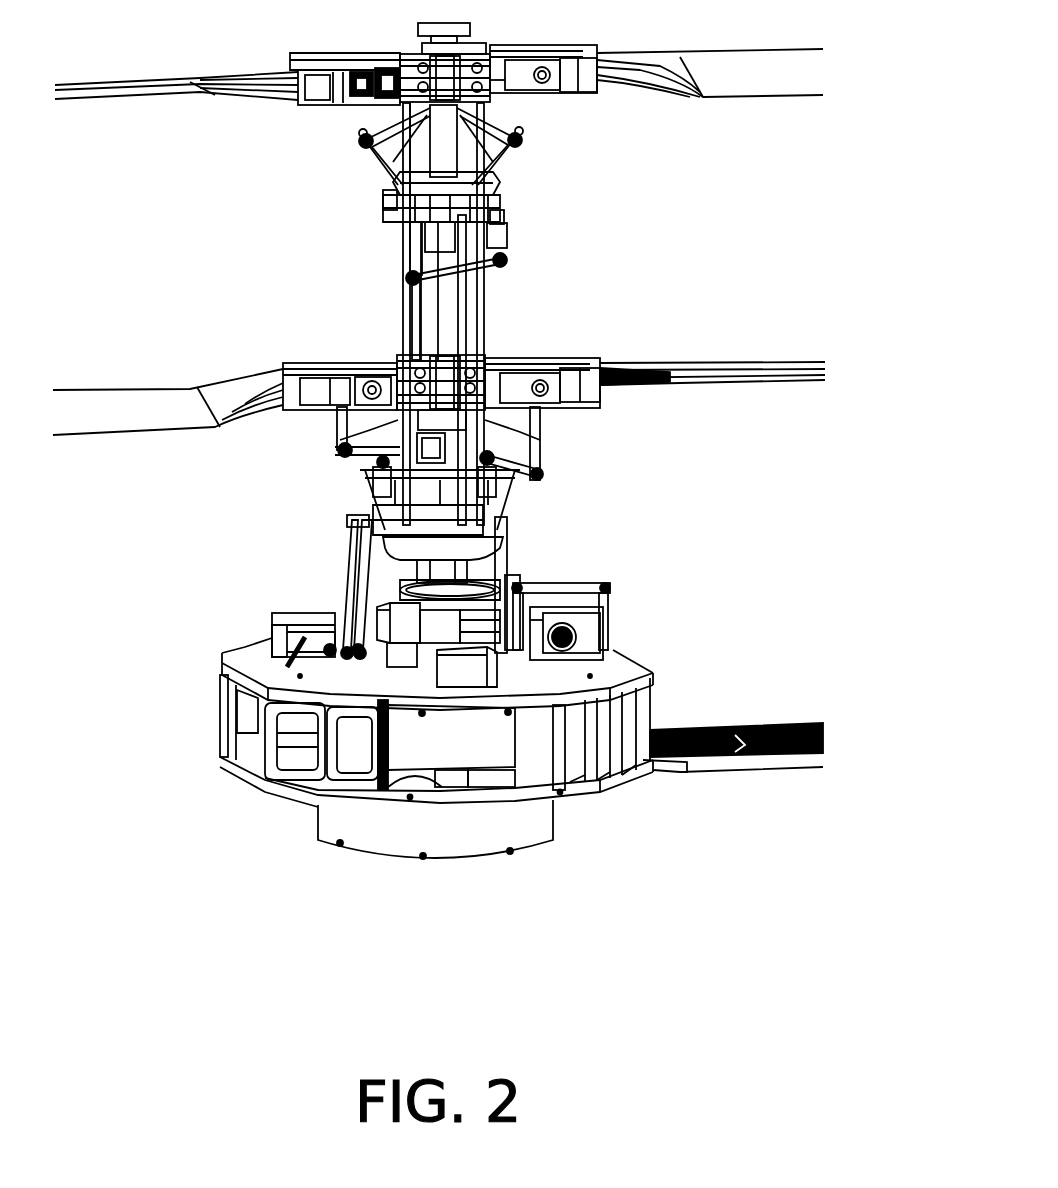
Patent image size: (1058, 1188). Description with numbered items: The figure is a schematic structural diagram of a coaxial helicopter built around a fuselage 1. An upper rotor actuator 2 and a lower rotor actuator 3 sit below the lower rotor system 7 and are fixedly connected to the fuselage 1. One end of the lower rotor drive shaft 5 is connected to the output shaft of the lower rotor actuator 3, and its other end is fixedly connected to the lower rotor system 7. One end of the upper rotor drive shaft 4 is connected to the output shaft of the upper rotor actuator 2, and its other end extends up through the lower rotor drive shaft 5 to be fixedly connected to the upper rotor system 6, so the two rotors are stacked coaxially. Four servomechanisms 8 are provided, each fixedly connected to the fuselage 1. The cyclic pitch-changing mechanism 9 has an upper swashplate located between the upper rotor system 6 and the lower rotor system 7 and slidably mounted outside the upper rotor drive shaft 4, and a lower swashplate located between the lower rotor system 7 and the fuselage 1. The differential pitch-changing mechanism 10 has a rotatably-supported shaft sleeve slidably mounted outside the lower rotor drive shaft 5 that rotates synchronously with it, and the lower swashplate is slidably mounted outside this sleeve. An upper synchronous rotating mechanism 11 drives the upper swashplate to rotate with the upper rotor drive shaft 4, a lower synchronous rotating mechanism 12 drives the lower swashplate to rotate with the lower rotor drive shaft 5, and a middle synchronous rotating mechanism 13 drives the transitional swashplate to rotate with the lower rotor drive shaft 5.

The fuselage 1 is at (253, 667).
The upper rotor actuator 2 is at (340, 824).
The lower rotor actuator 3 is at (440, 738).
The upper rotor drive shaft 4 is at (437, 158).
The lower rotor drive shaft 5 is at (440, 627).
The upper rotor system 6 is at (293, 93).
The lower rotor system 7 is at (190, 397).
The servomechanism 8 is at (313, 615).
The cyclic pitch-changing mechanism 9 is at (482, 345).
The differential pitch-changing mechanism 10 is at (580, 592).
The upper synchronous rotating mechanism 11 is at (517, 135).
The lower synchronous rotating mechanism 12 is at (482, 458).
The middle synchronous rotating mechanism 13 is at (503, 258).